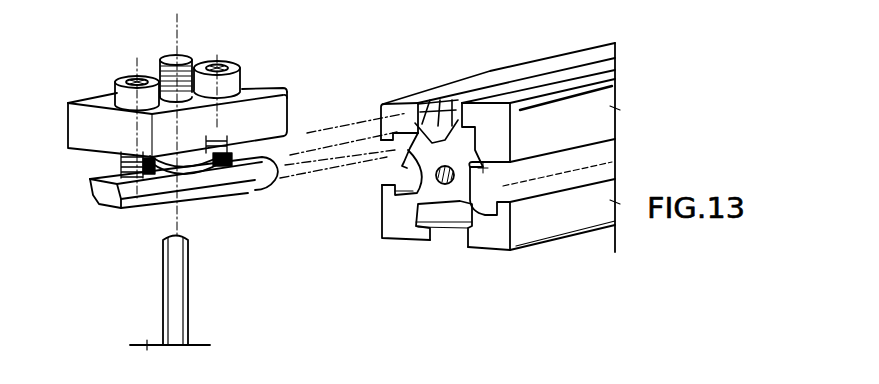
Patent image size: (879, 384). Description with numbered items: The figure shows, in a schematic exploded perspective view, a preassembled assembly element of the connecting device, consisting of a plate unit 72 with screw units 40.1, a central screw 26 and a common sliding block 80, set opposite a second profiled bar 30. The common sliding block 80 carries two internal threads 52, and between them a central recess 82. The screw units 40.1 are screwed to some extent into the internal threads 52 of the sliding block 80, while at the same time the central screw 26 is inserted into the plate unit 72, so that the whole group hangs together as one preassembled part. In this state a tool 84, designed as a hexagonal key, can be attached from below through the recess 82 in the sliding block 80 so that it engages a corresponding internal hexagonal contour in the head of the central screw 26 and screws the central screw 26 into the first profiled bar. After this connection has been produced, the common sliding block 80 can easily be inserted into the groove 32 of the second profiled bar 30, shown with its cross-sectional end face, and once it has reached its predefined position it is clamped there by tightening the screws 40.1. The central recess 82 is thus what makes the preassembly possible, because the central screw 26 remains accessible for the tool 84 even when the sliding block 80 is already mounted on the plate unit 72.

The central screw 26 is at (193, 121).
The second profiled bar 30 is at (500, 126).
The groove 32 is at (440, 90).
The screw units 40.1 is at (189, 105).
The internal threads 52 is at (202, 208).
The clamping plate 72 is at (221, 98).
The common sliding block 80 is at (153, 211).
The central recess 82 is at (210, 199).
The tool 84 is at (214, 293).